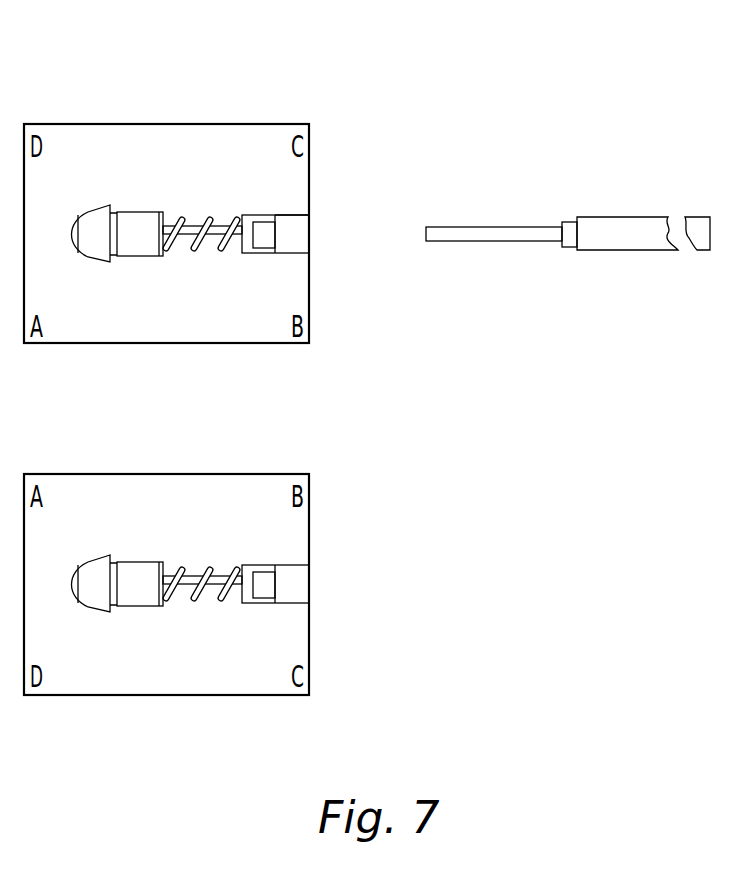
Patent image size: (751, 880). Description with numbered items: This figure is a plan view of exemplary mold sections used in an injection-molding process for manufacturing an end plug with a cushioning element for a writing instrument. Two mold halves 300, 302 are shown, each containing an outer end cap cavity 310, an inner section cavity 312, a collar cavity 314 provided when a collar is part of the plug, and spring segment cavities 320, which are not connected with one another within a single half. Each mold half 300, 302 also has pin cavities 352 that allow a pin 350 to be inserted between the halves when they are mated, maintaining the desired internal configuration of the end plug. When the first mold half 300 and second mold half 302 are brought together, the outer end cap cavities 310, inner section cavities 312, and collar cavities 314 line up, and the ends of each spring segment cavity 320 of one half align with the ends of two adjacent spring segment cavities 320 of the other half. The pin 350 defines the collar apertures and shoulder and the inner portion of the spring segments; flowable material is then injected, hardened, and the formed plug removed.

The first mold half 300 is at (52, 123).
The second mold half 302 is at (55, 697).
The outer end cap cavity 310 is at (95, 262).
The inner section cavity 312 is at (138, 257).
The collar cavity 314 is at (268, 254).
The spring segment cavities 320 is at (220, 252).
The pin 350 is at (517, 225).
The pin cavities 352 is at (293, 223).